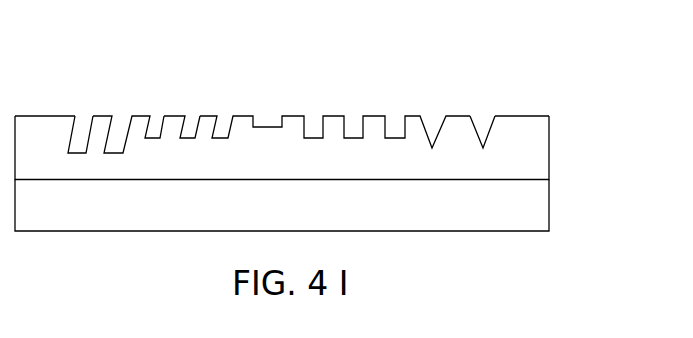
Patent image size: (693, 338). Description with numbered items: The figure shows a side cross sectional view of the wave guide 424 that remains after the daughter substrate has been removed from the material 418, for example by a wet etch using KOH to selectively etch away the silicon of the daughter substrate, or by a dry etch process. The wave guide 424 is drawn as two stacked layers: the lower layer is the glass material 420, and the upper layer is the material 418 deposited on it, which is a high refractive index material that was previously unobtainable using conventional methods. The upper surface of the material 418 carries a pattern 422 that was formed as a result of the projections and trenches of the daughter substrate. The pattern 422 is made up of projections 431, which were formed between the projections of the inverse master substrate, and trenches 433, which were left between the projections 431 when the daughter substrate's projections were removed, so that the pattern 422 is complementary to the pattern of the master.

The material 418 is at (549, 157).
The glass material 420 is at (549, 208).
The pattern 422 is at (483, 114).
The wave guide 424 is at (585, 101).
The projections 431 is at (175, 115).
The trenches 433 is at (84, 108).